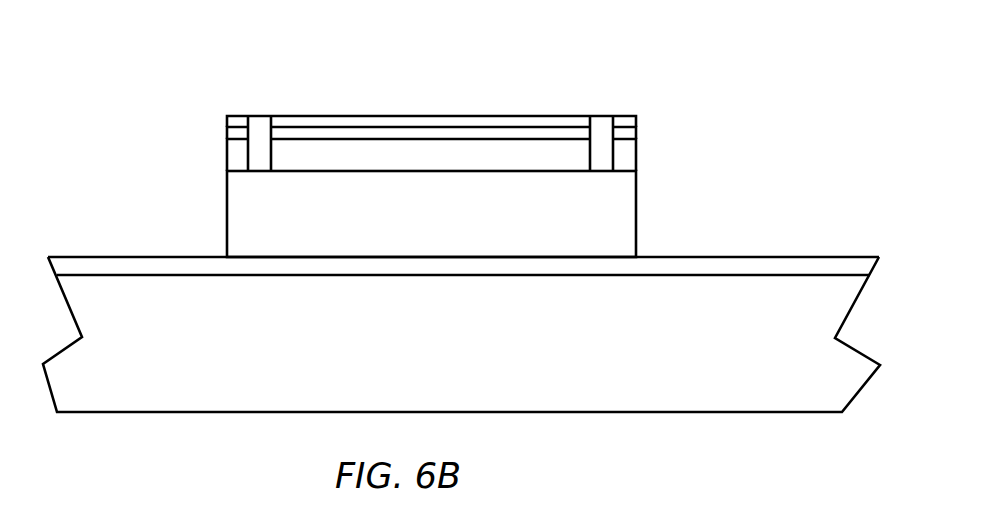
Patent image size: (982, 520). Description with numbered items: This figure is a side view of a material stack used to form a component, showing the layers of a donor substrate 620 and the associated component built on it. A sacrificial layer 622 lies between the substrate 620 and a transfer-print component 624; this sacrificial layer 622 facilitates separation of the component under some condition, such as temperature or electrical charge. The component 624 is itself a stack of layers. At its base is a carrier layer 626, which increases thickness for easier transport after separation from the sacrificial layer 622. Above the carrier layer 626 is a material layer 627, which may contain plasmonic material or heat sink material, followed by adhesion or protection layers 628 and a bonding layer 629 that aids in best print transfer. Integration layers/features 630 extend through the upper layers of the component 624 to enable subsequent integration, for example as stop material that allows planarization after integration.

The donor substrate 620 is at (680, 402).
The sacrificial layer 622 is at (83, 257).
The transfer-print component 624 is at (448, 155).
The carrier layer 626 is at (227, 248).
The material layer 627 is at (227, 162).
The adhesion or protection layers 628 is at (227, 132).
The bonding layer 629 is at (377, 115).
The integration layers/features 630 is at (265, 122).